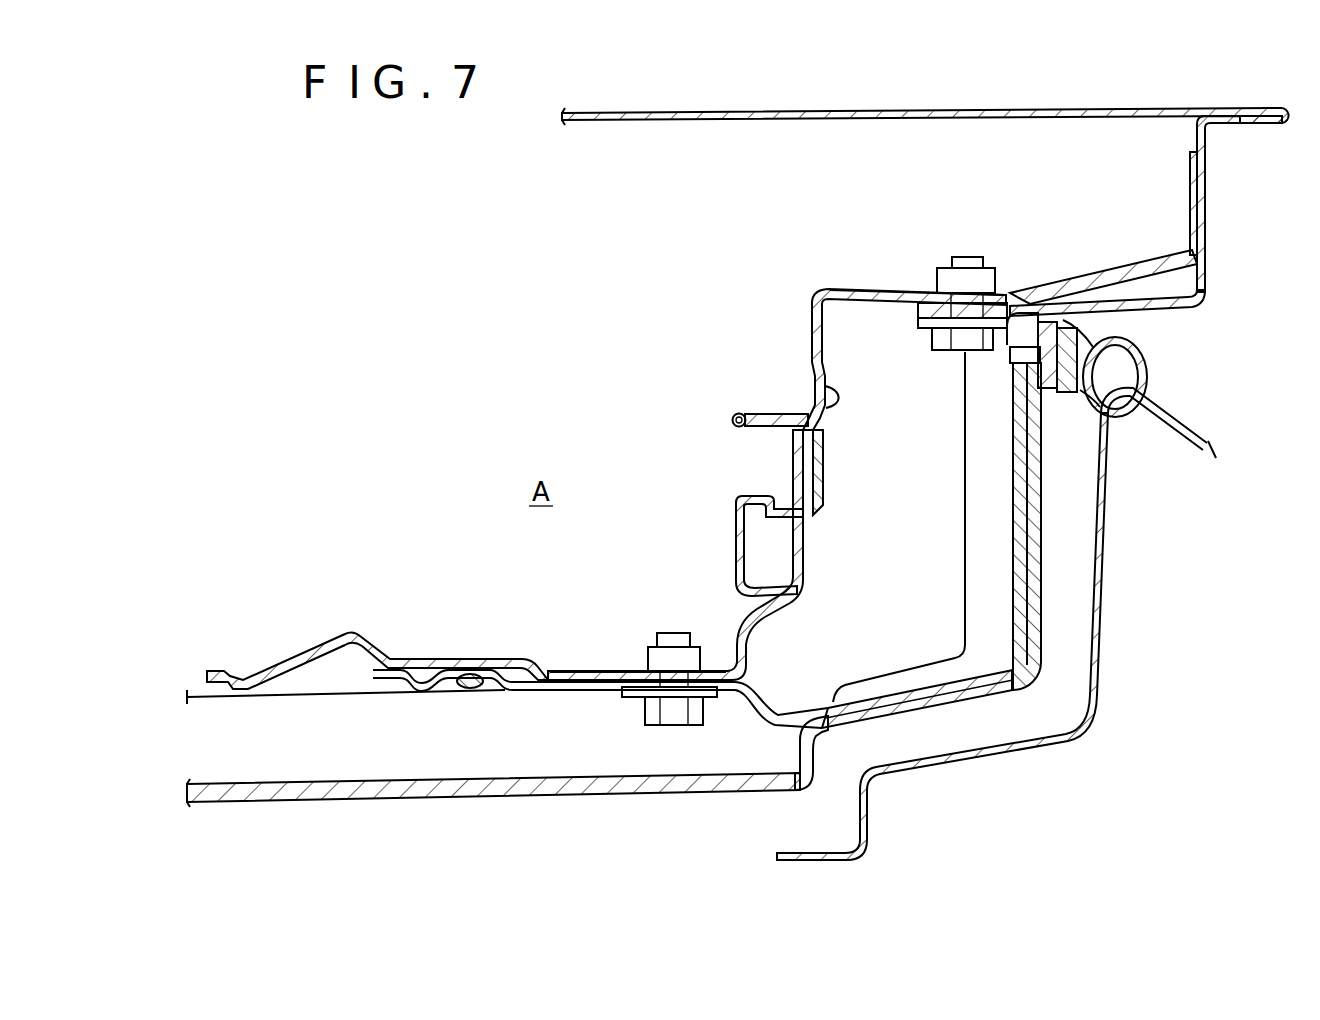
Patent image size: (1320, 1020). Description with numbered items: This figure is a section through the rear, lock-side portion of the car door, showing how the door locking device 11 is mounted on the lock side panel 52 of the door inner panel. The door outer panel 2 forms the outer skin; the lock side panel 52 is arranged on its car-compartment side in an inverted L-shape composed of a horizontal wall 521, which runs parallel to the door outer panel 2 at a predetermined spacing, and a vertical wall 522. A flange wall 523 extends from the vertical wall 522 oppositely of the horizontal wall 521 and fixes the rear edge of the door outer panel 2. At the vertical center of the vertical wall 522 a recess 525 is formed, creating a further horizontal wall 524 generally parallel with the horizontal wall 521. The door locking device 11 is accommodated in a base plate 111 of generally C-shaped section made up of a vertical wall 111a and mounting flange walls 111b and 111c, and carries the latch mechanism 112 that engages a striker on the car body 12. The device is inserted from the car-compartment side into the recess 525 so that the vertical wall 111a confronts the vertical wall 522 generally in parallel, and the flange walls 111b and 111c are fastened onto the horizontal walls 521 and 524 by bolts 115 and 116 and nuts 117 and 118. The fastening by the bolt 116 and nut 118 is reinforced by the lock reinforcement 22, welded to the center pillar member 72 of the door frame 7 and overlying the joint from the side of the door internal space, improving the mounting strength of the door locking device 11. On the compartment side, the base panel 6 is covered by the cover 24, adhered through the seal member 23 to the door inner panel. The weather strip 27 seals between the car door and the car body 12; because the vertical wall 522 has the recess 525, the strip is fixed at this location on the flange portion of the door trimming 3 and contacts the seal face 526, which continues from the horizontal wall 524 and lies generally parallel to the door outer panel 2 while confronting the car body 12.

The door outer panel 2 is at (900, 112).
The door trimming 3 is at (437, 798).
The base panel 6 is at (318, 643).
The door frame 7 is at (732, 419).
The door locking device 11 is at (885, 505).
The car body 12 is at (1031, 598).
The lock reinforcement 22 is at (762, 482).
The seal member 23 is at (467, 690).
The cover 24 is at (350, 695).
The weather strip 27 is at (1147, 366).
The lock side panel 52 is at (1159, 230).
The center pillar member 72 is at (734, 528).
The base plate 111 is at (1021, 505).
The vertical wall 111a is at (1014, 620).
The mounting flange wall 111b is at (920, 692).
The mounting flange wall 111c is at (1001, 317).
The latch mechanism 112 is at (976, 560).
The bolt 115 is at (675, 727).
The bolt 116 is at (958, 348).
The nut 117 is at (656, 660).
The nut 118 is at (944, 276).
The horizontal wall 521 is at (518, 684).
The vertical wall 522 is at (840, 332).
The flange wall 523 is at (1238, 110).
The horizontal wall 524 is at (890, 289).
The recess 525 is at (836, 403).
The seal face 526 is at (1157, 313).